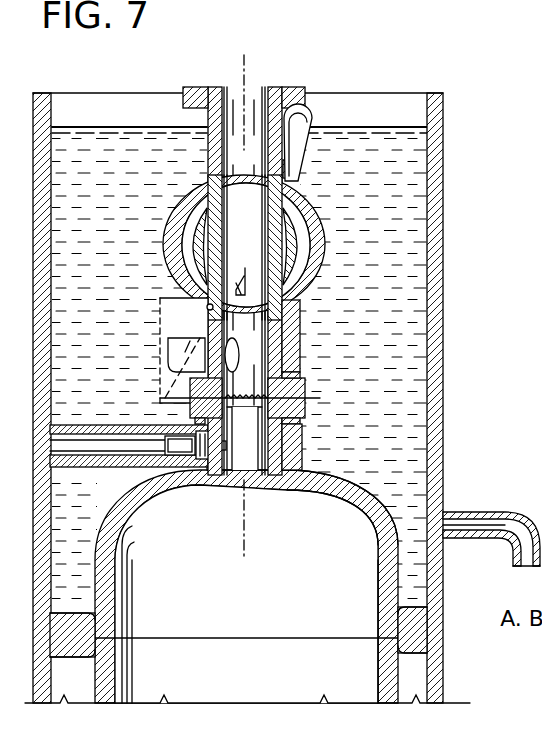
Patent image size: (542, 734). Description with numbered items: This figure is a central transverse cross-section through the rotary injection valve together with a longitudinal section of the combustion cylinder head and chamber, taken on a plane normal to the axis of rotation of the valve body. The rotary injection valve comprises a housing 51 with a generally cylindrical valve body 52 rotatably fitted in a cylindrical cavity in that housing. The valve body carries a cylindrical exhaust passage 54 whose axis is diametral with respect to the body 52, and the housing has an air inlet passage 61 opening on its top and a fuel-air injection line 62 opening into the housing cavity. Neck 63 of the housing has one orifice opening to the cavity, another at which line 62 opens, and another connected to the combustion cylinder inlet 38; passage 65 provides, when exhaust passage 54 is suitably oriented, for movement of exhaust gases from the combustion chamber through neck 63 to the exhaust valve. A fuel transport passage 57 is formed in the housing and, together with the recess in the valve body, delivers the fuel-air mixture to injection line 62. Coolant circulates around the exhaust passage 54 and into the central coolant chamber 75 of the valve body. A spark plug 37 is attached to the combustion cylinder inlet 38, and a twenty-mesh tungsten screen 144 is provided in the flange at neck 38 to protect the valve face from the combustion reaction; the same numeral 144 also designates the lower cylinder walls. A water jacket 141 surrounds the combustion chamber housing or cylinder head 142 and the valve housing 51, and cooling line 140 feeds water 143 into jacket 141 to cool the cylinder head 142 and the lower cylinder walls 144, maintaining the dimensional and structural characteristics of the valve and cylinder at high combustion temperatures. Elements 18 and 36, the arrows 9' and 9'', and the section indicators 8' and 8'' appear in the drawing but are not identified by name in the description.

The liquid 18 is at (133, 240).
The water jacket 141 is at (446, 465).
The tank 36 is at (228, 614).
The cylinder head 142 is at (330, 488).
The spark plug 37 is at (166, 440).
The outlet passage 65 is at (232, 161).
The housing 51 is at (316, 200).
The central coolant chamber 75 is at (193, 202).
The valve body 52 is at (330, 247).
The exhaust passage 54 is at (233, 241).
The section line 9' is at (234, 270).
The air inlet passage 61 is at (314, 150).
The fuel transport passage 57 is at (190, 330).
The fuel-air injection line 62 is at (178, 347).
The neck 63 is at (250, 356).
The section line 9'' is at (160, 368).
The tungsten screen 144 is at (260, 404).
The combustion cylinder inlet 38 is at (232, 472).
The water 143 is at (385, 375).
The cooling line 140 is at (528, 521).
The section line 8' is at (198, 102).
The section line 8'' is at (211, 520).